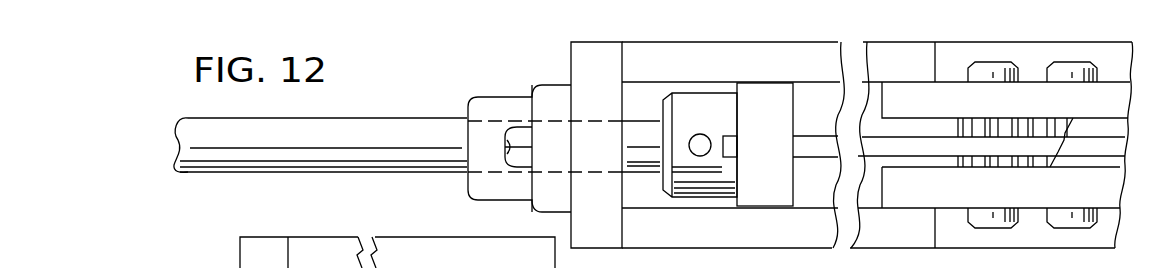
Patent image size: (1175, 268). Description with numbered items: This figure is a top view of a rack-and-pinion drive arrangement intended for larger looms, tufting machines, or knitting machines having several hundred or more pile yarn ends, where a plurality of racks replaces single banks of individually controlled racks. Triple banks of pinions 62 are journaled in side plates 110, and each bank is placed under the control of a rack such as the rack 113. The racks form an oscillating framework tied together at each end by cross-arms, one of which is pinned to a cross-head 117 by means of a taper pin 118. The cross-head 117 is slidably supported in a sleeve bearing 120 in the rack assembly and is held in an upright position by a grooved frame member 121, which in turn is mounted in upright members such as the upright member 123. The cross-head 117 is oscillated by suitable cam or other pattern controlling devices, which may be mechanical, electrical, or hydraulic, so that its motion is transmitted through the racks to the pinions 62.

The upright member 123 is at (578, 58).
The grooved frame member 121 is at (982, 258).
The cross-head 117 is at (392, 172).
The sleeve bearing 120 is at (488, 105).
The taper pin 118 is at (704, 133).
The rack 113 is at (827, 141).
The side plates 110 is at (935, 108).
The pinions 62 is at (1008, 62).